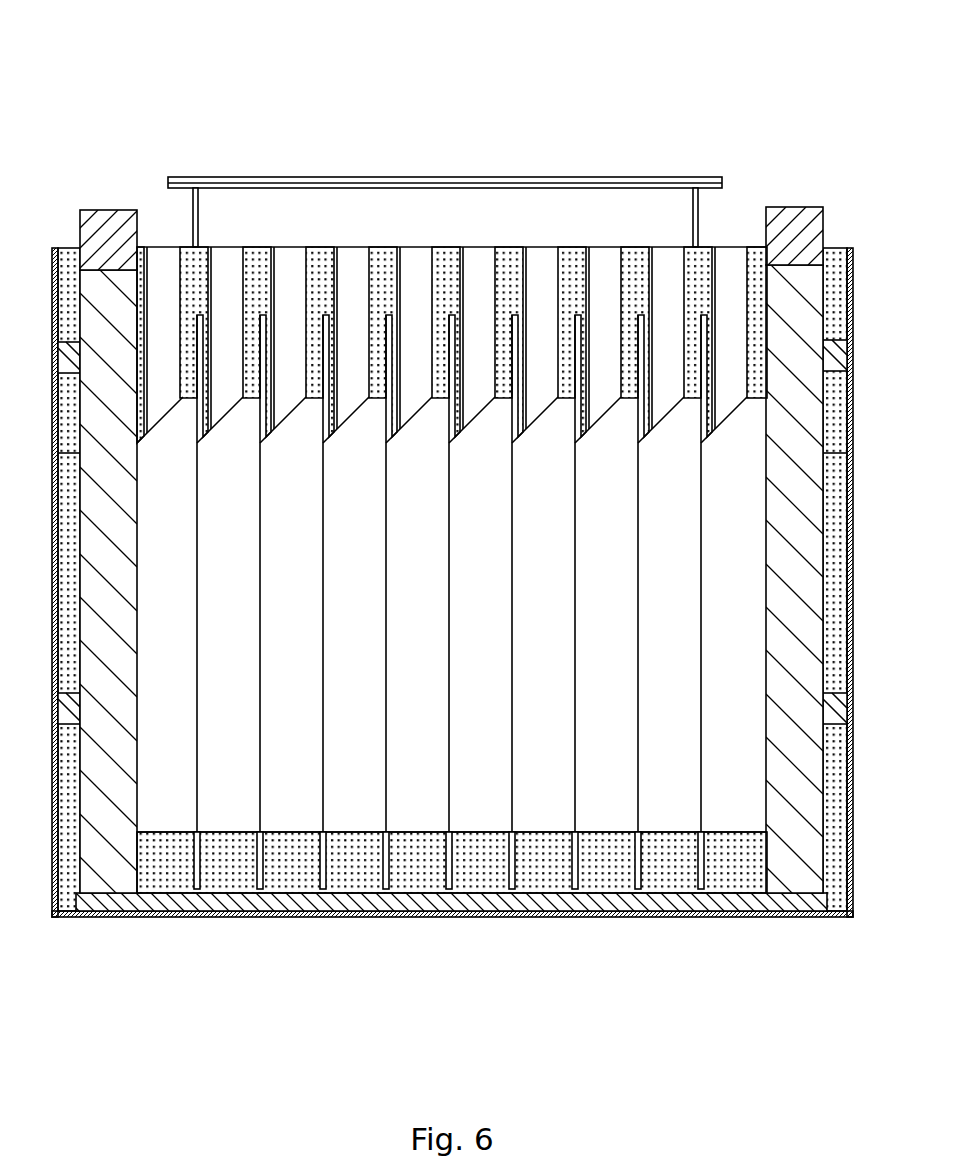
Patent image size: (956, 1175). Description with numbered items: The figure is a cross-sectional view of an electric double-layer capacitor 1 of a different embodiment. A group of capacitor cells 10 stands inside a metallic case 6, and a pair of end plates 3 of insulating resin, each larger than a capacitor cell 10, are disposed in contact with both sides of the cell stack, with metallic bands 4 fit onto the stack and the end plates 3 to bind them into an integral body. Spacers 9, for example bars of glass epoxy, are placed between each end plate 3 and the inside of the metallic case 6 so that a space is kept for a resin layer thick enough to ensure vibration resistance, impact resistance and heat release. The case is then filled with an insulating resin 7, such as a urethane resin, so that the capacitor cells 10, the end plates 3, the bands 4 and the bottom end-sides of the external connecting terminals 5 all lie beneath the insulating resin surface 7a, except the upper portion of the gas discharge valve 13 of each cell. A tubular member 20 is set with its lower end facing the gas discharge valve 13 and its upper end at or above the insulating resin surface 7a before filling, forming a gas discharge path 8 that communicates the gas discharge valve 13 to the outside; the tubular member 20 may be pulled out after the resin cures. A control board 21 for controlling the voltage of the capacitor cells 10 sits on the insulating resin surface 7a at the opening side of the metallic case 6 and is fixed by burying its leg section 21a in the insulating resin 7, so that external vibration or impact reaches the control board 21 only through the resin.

The electric double-layer capacitor 1 is at (276, 138).
The end plate 3 is at (108, 870).
The band 4 is at (58, 453).
The external connecting terminal 5 is at (107, 216).
The metallic case 6 is at (56, 300).
The insulating resin 7 is at (355, 872).
The insulating resin surface 7a is at (630, 246).
The gas discharge path 8 is at (413, 253).
The spacer 9 is at (62, 359).
The capacitor cell 10 is at (613, 845).
The gas discharge valve 13 is at (480, 410).
The tubular member 20 is at (555, 263).
The control board 21 is at (581, 177).
The leg section 21a is at (198, 202).